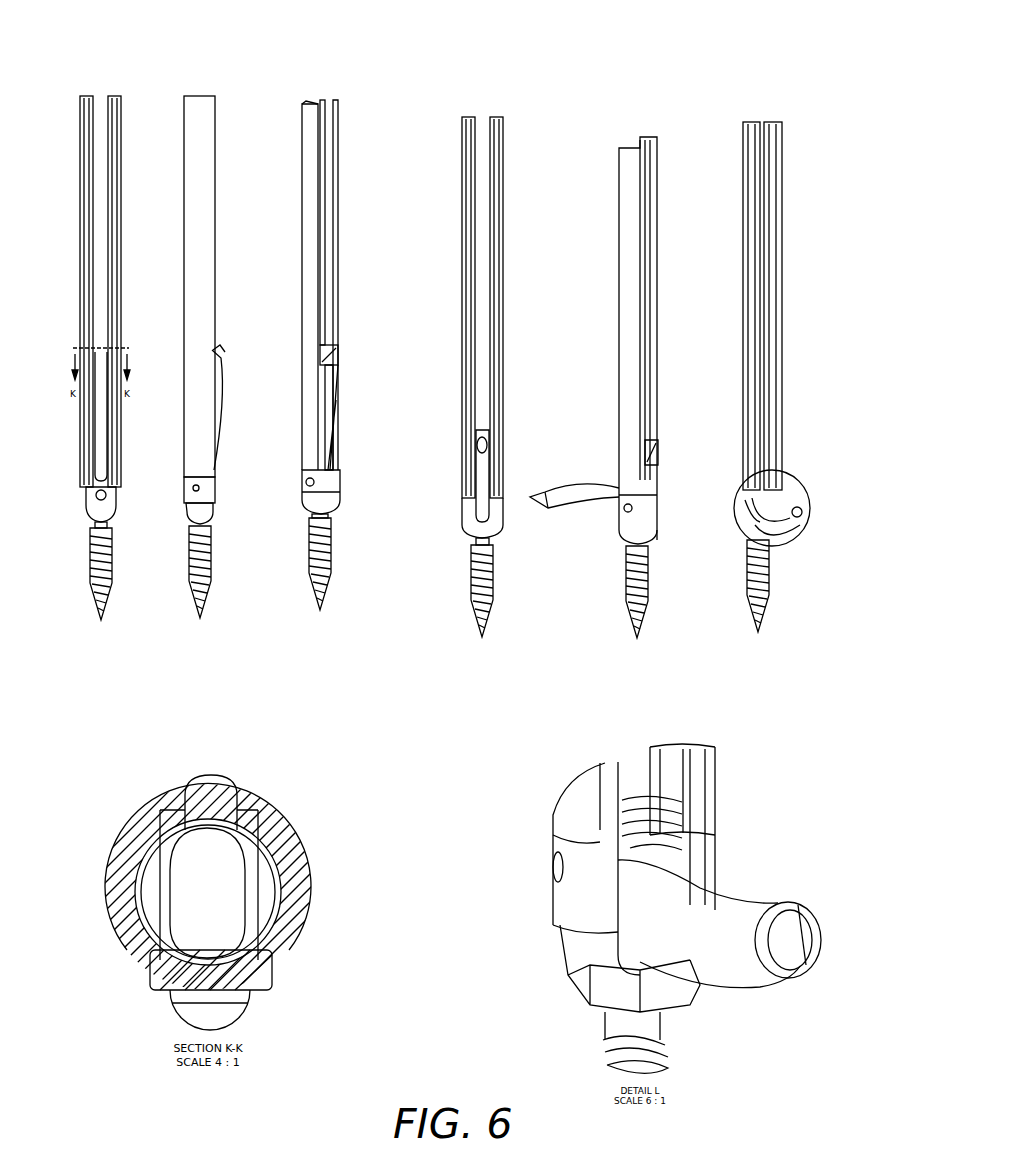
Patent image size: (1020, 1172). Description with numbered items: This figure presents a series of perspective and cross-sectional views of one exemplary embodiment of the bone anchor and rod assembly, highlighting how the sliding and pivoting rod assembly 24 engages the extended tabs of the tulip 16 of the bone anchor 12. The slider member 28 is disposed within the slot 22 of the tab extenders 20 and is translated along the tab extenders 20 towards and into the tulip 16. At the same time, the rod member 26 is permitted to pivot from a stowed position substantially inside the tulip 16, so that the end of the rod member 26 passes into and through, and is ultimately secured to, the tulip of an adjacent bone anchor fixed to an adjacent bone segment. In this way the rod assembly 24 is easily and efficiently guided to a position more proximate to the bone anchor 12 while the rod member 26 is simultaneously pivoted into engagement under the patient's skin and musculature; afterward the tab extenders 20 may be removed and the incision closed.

The bone anchor 12 is at (336, 566).
The tulip 16 is at (338, 497).
The tab extenders 20 is at (338, 132).
The slot 22 is at (332, 204).
The rod assembly 24 is at (345, 433).
The rod member 26 is at (342, 398).
The slider member 28 is at (336, 345).